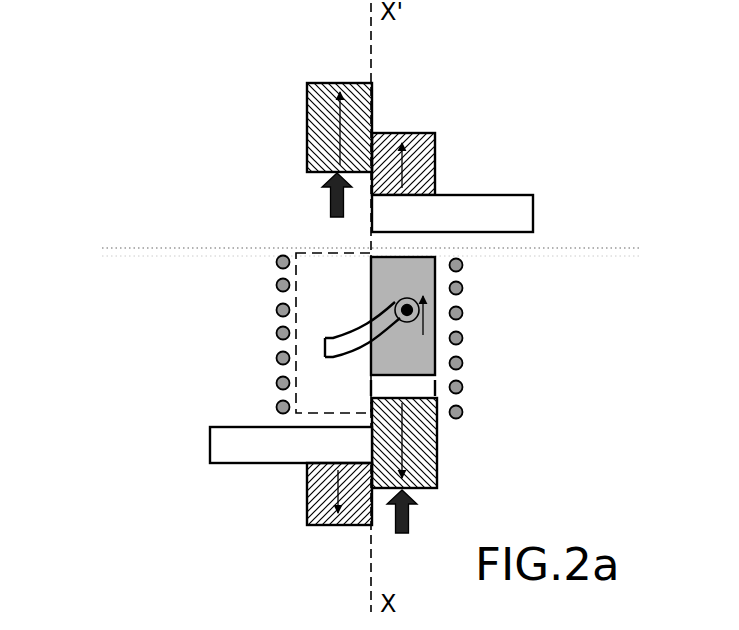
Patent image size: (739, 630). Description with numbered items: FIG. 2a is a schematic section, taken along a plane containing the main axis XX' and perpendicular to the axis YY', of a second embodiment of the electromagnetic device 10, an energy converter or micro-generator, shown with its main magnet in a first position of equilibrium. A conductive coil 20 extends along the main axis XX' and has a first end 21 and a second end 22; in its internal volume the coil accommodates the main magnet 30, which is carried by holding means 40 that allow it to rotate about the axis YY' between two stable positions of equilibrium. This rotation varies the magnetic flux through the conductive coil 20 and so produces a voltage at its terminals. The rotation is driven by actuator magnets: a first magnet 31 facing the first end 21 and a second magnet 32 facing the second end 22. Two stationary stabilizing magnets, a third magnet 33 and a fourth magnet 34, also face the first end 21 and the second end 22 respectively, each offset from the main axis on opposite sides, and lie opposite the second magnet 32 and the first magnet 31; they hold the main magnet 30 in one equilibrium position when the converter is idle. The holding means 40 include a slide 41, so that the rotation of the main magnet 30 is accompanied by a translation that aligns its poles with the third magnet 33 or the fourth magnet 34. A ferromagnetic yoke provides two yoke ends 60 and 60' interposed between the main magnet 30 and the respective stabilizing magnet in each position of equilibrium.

The electromagnetic device 10 is at (240, 75).
The conductive coil 20 is at (276, 285).
The first end 21 is at (276, 407).
The second end 22 is at (288, 240).
The main magnet 30 is at (437, 355).
The first magnet 31 is at (437, 475).
The second magnet 32 is at (308, 140).
The third magnet 33 is at (428, 162).
The fourth magnet 34 is at (318, 508).
The holding means 40 is at (328, 263).
The slide 41 is at (325, 348).
The yoke end 60 is at (503, 195).
The yoke end 60' is at (241, 465).